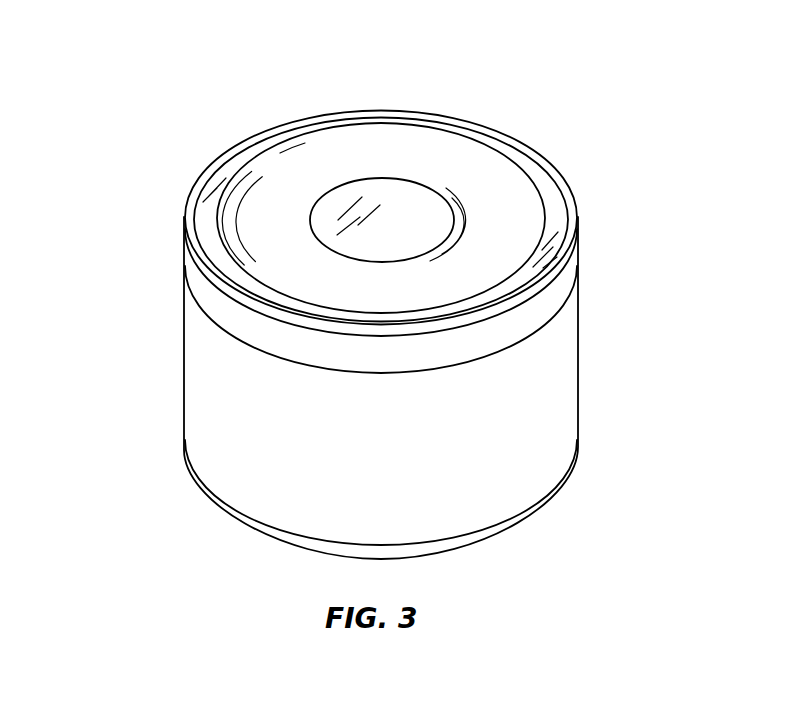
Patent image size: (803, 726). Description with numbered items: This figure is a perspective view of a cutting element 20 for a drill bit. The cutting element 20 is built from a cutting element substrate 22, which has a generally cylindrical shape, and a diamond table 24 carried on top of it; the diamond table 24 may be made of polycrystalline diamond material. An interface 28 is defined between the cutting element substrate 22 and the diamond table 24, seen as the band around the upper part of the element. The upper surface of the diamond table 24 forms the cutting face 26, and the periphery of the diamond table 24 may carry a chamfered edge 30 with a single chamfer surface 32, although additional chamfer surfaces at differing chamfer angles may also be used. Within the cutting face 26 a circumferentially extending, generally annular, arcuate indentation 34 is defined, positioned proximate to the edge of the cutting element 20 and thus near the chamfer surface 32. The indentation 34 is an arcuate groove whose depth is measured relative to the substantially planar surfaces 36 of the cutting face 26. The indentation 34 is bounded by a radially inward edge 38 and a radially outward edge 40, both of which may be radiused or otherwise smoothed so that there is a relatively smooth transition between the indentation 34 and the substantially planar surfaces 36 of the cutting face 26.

The cutting element 20 is at (145, 112).
The cutting element substrate 22 is at (381, 485).
The diamond table 24 is at (381, 319).
The cutting face 26 is at (404, 109).
The interface 28 is at (227, 333).
The chamfered edge 30 is at (575, 186).
The chamfer surface 32 is at (187, 228).
The indentation 34 is at (455, 170).
The substantially planar surfaces 36 is at (268, 138).
The radially inward edge 38 is at (458, 218).
The radially outward edge 40 is at (520, 268).